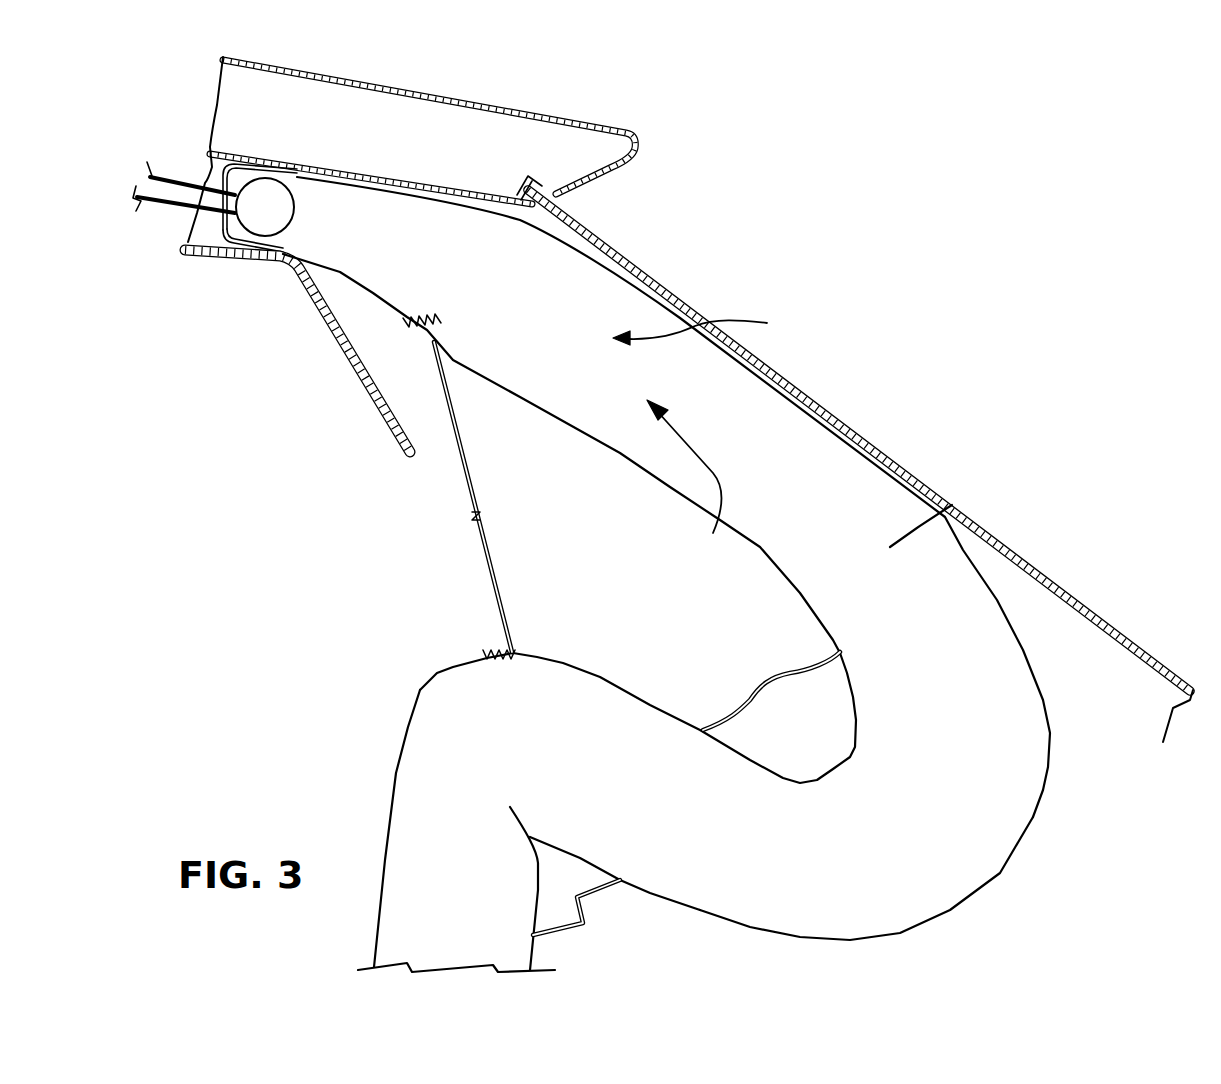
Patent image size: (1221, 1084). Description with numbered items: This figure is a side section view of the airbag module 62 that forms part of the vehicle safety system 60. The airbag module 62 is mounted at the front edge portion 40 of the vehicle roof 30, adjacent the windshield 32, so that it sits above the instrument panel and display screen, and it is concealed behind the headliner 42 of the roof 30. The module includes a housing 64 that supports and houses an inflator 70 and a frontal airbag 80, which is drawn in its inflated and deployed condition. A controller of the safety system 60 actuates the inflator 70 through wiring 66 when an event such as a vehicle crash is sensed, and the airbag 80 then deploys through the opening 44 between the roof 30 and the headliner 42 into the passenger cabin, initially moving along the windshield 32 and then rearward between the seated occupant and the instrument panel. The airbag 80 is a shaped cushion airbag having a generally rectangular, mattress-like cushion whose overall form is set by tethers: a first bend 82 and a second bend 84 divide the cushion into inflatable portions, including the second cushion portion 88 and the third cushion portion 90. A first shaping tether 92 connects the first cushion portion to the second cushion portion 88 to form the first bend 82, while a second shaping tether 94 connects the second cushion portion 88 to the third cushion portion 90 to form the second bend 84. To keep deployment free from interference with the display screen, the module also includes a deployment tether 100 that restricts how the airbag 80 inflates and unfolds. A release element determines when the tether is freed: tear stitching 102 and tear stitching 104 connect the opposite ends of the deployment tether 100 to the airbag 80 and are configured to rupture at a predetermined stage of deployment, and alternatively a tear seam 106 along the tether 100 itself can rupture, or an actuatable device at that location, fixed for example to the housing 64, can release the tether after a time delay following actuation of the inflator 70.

The vehicle roof 30 is at (366, 78).
The windshield 32 is at (850, 428).
The front edge portion 40 is at (545, 152).
The headliner 42 is at (190, 252).
The opening 44 is at (687, 480).
The vehicle safety system 60 is at (209, 96).
The airbag module 62 is at (706, 329).
The housing 64 is at (229, 152).
The wiring 66 is at (182, 172).
The inflator 70 is at (270, 193).
The frontal airbag 80 is at (943, 520).
The first bend 82 is at (987, 780).
The second bend 84 is at (452, 687).
The second cushion portion 88 is at (753, 863).
The third cushion portion 90 is at (407, 897).
The first shaping tether 92 is at (760, 683).
The second shaping tether 94 is at (593, 903).
The deployment tether 100 is at (497, 577).
The tear stitching 102 is at (416, 325).
The tear stitching 104 is at (487, 650).
The tear seam 106 is at (473, 513).